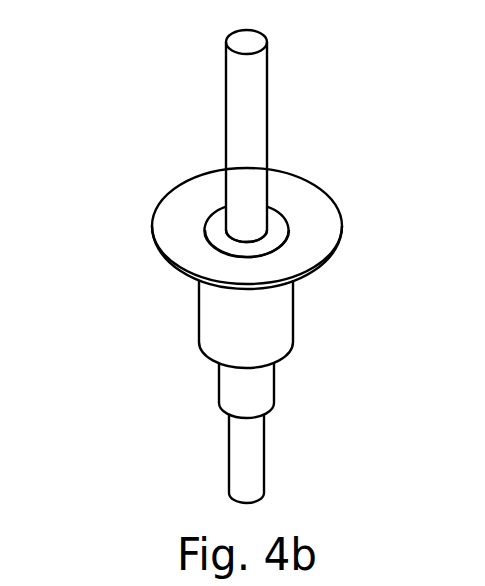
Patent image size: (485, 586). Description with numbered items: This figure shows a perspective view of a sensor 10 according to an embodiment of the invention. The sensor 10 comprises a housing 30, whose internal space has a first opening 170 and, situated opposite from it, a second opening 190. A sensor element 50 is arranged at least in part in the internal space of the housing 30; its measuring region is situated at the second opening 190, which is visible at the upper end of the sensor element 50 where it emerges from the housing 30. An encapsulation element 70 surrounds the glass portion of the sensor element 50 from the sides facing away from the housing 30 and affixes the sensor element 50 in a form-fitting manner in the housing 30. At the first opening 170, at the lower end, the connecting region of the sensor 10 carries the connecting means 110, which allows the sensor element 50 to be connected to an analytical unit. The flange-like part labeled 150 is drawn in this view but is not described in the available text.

The sensor 10 is at (267, 80).
The sensor element 50 is at (250, 170).
The flange 150 is at (325, 230).
The second opening 190 is at (218, 215).
The encapsulation element 70 is at (213, 233).
The housing 30 is at (293, 312).
The first opening 170 is at (274, 382).
The connecting means 110 is at (229, 452).